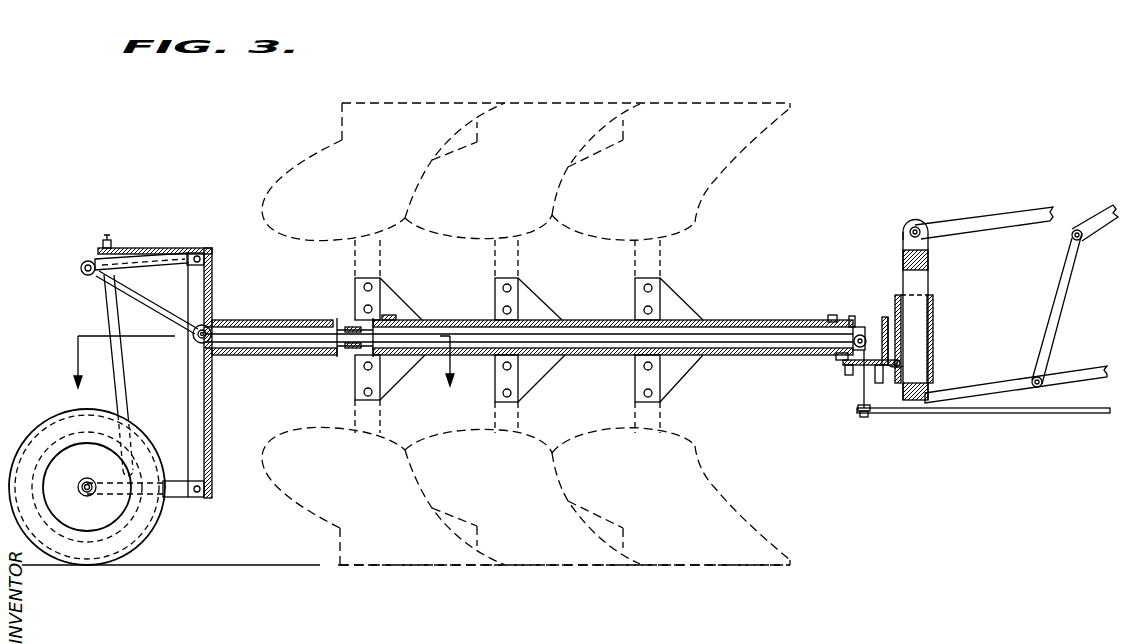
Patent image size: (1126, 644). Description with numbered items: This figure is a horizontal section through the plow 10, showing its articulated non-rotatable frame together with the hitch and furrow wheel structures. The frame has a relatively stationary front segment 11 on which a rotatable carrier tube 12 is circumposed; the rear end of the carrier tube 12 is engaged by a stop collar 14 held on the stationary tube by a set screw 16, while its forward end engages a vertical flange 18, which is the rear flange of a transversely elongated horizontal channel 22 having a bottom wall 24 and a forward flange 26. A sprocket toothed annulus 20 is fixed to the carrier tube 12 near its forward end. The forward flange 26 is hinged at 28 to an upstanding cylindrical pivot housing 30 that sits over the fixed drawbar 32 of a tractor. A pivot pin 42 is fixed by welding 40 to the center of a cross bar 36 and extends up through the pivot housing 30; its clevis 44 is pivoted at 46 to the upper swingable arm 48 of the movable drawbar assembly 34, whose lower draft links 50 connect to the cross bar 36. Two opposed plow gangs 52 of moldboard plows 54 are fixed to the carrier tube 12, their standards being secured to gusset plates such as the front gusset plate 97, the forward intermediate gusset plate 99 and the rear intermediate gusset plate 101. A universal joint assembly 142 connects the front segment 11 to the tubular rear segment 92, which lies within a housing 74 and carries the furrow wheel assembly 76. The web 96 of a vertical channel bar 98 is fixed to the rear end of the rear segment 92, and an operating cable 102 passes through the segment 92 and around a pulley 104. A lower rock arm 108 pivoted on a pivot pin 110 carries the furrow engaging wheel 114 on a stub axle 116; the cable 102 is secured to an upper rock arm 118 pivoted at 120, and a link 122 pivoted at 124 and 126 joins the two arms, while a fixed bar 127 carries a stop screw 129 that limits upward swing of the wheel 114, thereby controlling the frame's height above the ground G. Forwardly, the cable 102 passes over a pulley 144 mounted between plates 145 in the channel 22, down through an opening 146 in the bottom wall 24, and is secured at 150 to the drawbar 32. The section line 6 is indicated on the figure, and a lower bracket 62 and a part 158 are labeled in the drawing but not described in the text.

The section line 6 is at (260, 363).
The plow 10 is at (733, 319).
The front segment 11 is at (604, 320).
The carrier tube 12 is at (770, 318).
The stop collar 14 is at (385, 380).
The set screw 16 is at (400, 312).
The vertical flange 18 is at (850, 325).
The sprocket toothed annulus 20 is at (846, 370).
The horizontal channel 22 is at (863, 316).
The bottom wall 24 is at (862, 380).
The forward flange 26 is at (885, 317).
The hinge 28 is at (880, 383).
The pivot housing 30 is at (934, 325).
The fixed drawbar 32 is at (960, 413).
The movable drawbar assembly 34 is at (1000, 215).
The cross bar 36 is at (935, 393).
The welding 40 is at (934, 378).
The pivot pin 42 is at (930, 282).
The clevis 44 is at (905, 226).
The pivot 46 is at (918, 226).
The upper swingable arm 48 is at (975, 216).
The lower draft links 50 is at (1072, 388).
The plow gangs 52 is at (711, 180).
The moldboard plows 54 is at (660, 103).
The lower bracket 62 is at (540, 372).
The housing 74 is at (296, 320).
The furrow wheel assembly 76 is at (268, 312).
The rear segment 92 is at (297, 356).
The web 96 is at (213, 300).
The front gusset plate 97 is at (672, 304).
The channel bar 98 is at (212, 284).
The forward intermediate gusset plate 99 is at (540, 306).
The rear intermediate gusset plate 101 is at (387, 313).
The operating cable 102 is at (150, 303).
The pulley 104 is at (195, 341).
The lower rock arm 108 is at (181, 497).
The pivot pin 110 is at (203, 495).
The furrow engaging wheel 114 is at (54, 426).
The stub axle 116 is at (93, 488).
The upper rock arm 118 is at (145, 268).
The pivot 120 is at (205, 251).
The link 122 is at (118, 386).
The pivot 124 is at (85, 263).
The pivot 126 is at (150, 522).
The fixed bar 127 is at (153, 248).
The stop screw 129 is at (108, 238).
The universal joint assembly 142 is at (354, 358).
The pulley 144 is at (834, 357).
The plates 145 is at (853, 316).
The opening 146 is at (858, 366).
The cable securement 150 is at (866, 417).
The bolt 158 is at (830, 314).
The ground G is at (224, 565).